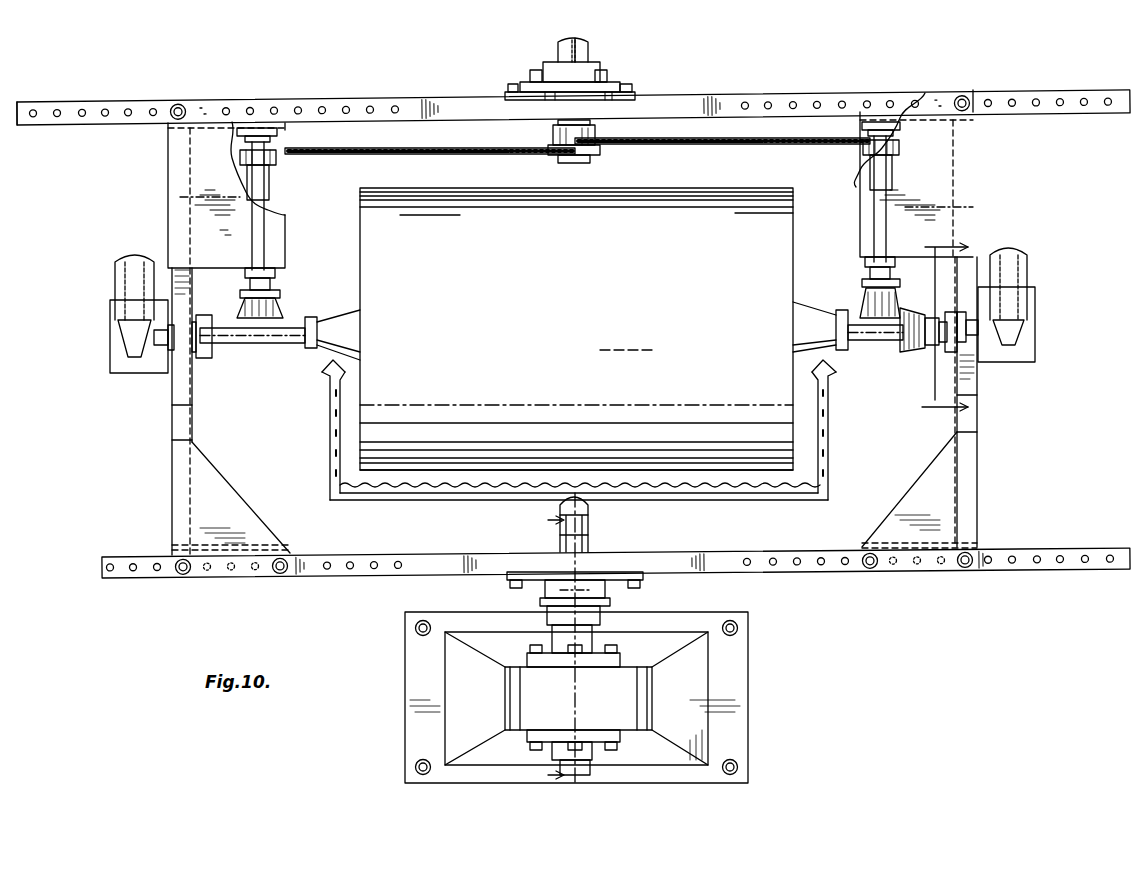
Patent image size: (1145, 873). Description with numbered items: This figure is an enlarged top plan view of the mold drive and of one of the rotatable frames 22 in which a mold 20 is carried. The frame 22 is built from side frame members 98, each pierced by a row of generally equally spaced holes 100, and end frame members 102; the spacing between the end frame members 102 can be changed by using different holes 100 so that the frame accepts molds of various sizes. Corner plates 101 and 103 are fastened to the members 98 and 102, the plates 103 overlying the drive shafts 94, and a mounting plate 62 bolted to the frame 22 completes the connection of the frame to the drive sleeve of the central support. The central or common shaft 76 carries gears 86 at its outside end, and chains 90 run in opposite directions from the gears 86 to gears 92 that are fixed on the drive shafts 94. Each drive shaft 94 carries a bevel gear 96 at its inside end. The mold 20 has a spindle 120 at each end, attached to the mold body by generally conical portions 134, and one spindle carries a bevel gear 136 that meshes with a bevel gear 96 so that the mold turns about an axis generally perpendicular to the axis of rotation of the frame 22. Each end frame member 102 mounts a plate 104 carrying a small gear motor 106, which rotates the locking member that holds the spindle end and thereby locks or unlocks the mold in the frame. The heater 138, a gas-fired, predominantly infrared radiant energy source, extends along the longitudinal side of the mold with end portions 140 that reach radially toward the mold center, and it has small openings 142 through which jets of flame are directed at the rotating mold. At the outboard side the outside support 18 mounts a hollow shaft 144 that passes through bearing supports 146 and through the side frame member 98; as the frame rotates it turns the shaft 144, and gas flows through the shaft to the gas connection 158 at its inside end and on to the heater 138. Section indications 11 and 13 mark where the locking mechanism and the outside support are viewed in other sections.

The section line 11- 11 is at (934, 327).
The section line 13- 13 is at (584, 640).
The outside support 18 is at (750, 672).
The mold 20 is at (592, 308).
The rotatable frame 22 is at (976, 90).
The mounting plate 62 is at (600, 82).
The central shaft 76 is at (548, 50).
The gear 86 is at (552, 144).
The chain 90 is at (450, 155).
The gear 92 is at (262, 165).
The drive shaft 94 is at (262, 183).
The bevel gear 96 is at (280, 306).
The side frame member 98 is at (418, 100).
The hole 100 is at (355, 100).
The corner plate 101 is at (178, 488).
The end frame member 102 is at (176, 417).
The corner plate 103 is at (192, 223).
The plate 104 is at (110, 360).
The gear motor 106 is at (125, 276).
The spindle 120 is at (270, 347).
The conical portion 134 is at (340, 308).
The bevel gear 136 is at (915, 350).
The radiant energy source 138 is at (448, 515).
The end portion 140 is at (333, 428).
The opening 142 is at (510, 490).
The shaft 144 is at (600, 618).
The bearing support 146 is at (545, 640).
The gas connection 158 is at (558, 532).